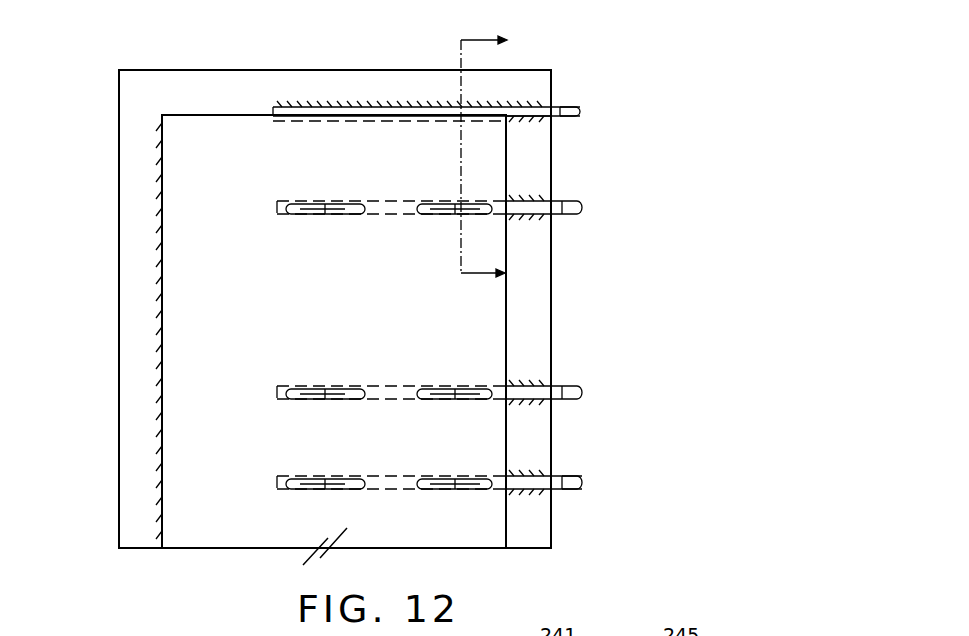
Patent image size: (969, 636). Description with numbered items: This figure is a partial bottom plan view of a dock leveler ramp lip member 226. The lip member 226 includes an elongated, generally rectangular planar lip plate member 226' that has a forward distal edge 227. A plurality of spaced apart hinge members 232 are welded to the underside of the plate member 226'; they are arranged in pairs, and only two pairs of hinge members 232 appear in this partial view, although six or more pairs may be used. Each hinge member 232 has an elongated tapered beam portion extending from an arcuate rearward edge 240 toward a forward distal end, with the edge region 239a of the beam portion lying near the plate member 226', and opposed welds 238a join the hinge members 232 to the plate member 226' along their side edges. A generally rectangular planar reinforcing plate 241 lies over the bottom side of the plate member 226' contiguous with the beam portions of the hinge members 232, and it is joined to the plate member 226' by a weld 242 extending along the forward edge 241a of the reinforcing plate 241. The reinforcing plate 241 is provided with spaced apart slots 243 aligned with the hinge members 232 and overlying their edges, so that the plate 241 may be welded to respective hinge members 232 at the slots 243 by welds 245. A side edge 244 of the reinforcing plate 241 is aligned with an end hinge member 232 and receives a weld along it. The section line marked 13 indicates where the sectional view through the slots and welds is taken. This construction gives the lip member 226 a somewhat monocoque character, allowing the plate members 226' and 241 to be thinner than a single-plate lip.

The lip member 226 is at (335, 281).
The lip plate member 226' is at (360, 58).
The forward distal edge 227 is at (119, 93).
The reinforcing plate 241 is at (218, 122).
The forward edge of the reinforcing plate 241a is at (160, 406).
The weld 242 is at (156, 238).
The side edge of the reinforcing plate 244 is at (180, 108).
The top plate 239a is at (402, 106).
The opposed welds 238a is at (536, 107).
The hinge members 232 is at (575, 108).
The arcuate rearward edge 240 is at (582, 116).
The slots 243 is at (330, 206).
The welds 245 is at (298, 210).
The section line 13- 13 is at (498, 156).